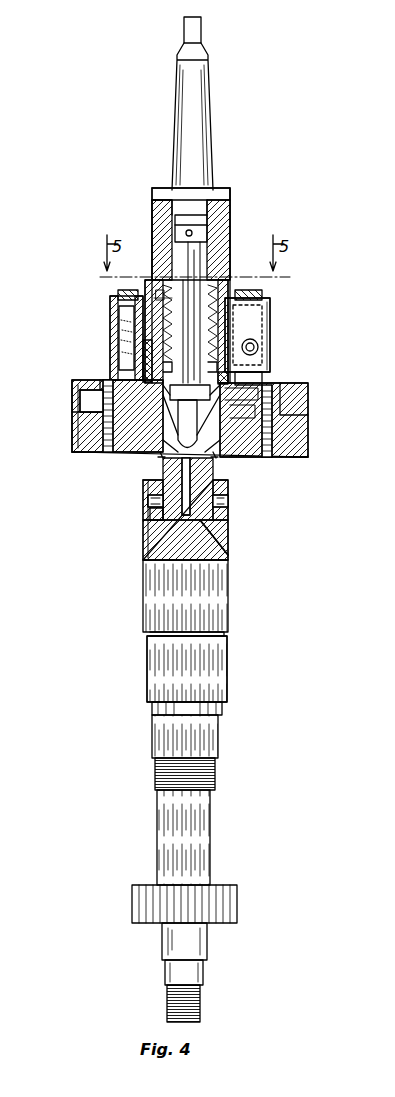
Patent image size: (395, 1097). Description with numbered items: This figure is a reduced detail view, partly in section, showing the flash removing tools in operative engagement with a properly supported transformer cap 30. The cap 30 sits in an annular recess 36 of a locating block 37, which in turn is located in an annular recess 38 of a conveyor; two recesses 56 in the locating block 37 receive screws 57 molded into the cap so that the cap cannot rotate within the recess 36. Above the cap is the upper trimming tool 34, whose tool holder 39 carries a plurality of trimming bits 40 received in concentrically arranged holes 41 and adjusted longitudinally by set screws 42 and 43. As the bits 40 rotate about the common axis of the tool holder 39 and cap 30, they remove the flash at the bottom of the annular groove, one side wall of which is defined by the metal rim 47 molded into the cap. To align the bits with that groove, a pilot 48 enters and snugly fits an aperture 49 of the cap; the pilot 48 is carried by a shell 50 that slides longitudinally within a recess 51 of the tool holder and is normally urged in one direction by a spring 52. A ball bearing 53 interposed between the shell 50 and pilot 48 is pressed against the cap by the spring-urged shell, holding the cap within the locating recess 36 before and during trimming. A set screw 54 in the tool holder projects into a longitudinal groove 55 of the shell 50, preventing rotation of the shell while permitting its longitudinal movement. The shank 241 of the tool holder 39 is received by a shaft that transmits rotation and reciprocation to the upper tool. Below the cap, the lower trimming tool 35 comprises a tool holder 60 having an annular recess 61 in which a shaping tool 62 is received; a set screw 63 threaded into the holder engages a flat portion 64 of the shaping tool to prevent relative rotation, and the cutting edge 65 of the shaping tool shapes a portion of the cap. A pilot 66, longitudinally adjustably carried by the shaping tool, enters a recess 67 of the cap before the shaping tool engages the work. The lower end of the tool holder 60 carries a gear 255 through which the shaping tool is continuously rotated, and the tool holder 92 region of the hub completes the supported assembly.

The shank 241 is at (196, 137).
The tool holder 39 is at (231, 250).
The upper trimming tool 34 is at (231, 212).
The longitudinal groove 55 is at (158, 202).
The set screw 54 is at (153, 276).
The recess 51 is at (205, 215).
The shell 50 is at (203, 266).
The set screw 43 is at (120, 296).
The concentrically arranged holes 41 is at (122, 357).
The set screw 42 is at (125, 340).
The spring 52 is at (232, 313).
The ball bearing 53 is at (262, 352).
The trimming bits 40 is at (142, 371).
The transformer cap 30 is at (232, 443).
The hub flange 92 is at (72, 386).
The screws 57 is at (101, 432).
The recesses 56 is at (72, 450).
The aperture 49 is at (80, 400).
The pilot 48 is at (176, 400).
The metal rim 47 is at (72, 392).
The annular recess 36 is at (242, 388).
The annular recess 38 is at (292, 396).
The locating block 37 is at (285, 411).
The shaping tool 62 is at (216, 479).
The tool holder 60 is at (229, 540).
The annular recess 61 is at (229, 505).
The set screw 63 is at (150, 502).
The flat portion 64 is at (158, 518).
The cutting edge 65 is at (162, 458).
The pilot 66 is at (217, 457).
The recess 67 is at (143, 482).
The lower trimming tool 35 is at (212, 598).
The gear 255 is at (238, 907).